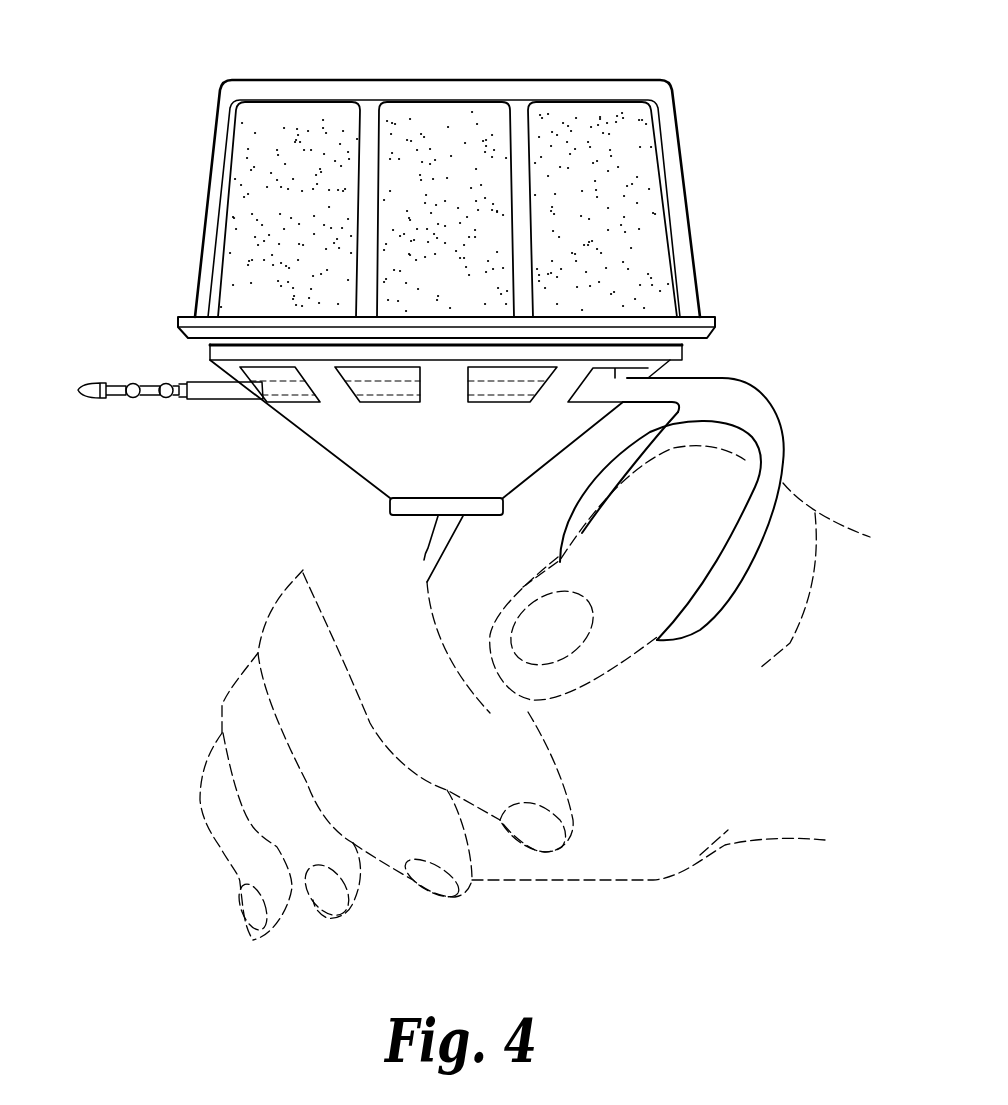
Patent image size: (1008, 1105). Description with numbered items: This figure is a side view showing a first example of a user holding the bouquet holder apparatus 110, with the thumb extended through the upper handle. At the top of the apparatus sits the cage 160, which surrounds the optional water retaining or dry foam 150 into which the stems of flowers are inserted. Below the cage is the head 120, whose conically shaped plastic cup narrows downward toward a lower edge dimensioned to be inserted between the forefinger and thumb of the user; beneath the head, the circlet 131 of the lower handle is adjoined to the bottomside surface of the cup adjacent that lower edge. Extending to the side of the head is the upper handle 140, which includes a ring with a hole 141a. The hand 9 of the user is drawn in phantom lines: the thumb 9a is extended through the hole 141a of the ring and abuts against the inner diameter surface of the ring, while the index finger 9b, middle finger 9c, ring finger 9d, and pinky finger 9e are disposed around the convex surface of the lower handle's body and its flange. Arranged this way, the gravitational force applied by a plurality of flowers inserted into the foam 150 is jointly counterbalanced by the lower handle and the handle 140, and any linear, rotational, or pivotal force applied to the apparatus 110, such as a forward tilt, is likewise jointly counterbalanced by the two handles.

The bouquet holder apparatus 110 is at (169, 89).
The cage 160 is at (677, 125).
The foam 150 is at (647, 210).
The head 120 is at (189, 363).
The circlet 131 is at (487, 510).
The handle 140 is at (722, 605).
The hole 141a is at (732, 437).
The hand 9 is at (845, 490).
The thumb 9a is at (667, 553).
The index finger 9b is at (462, 738).
The middle finger 9c is at (398, 817).
The ring finger 9d is at (273, 770).
The pinky finger 9e is at (237, 855).